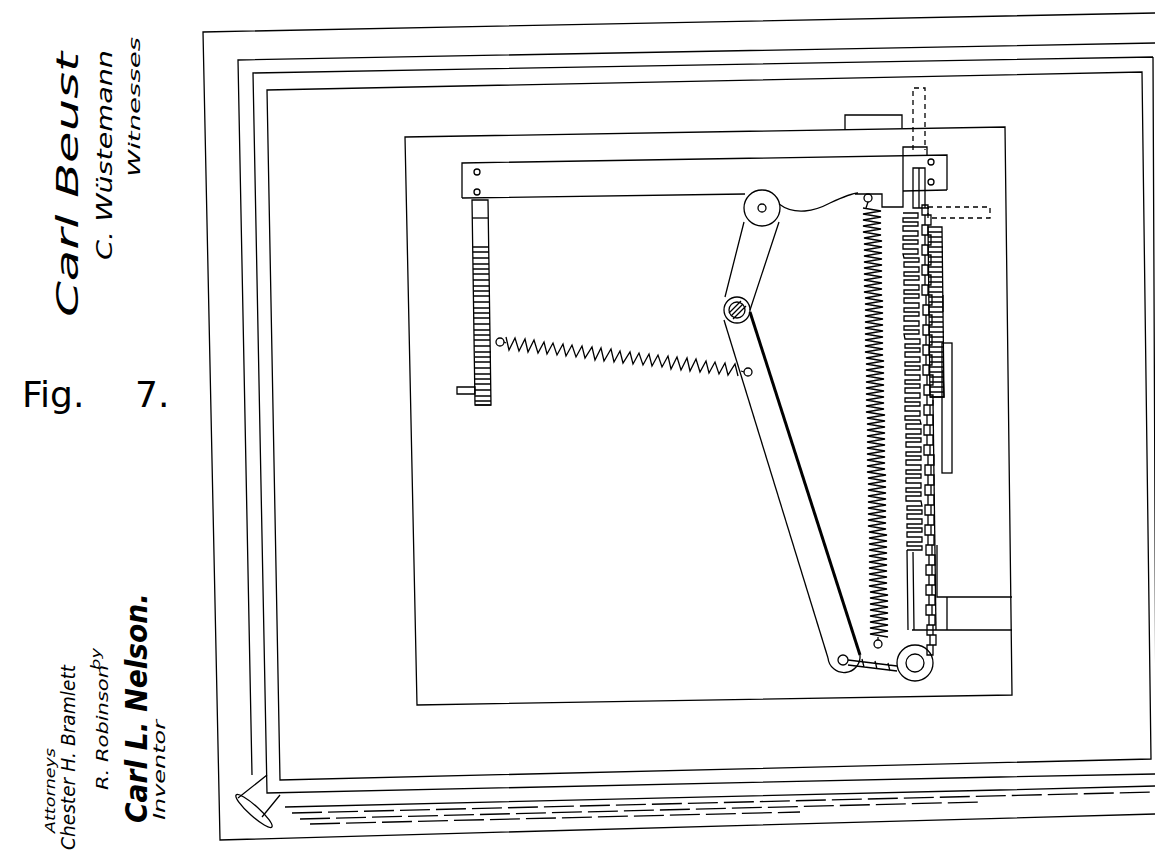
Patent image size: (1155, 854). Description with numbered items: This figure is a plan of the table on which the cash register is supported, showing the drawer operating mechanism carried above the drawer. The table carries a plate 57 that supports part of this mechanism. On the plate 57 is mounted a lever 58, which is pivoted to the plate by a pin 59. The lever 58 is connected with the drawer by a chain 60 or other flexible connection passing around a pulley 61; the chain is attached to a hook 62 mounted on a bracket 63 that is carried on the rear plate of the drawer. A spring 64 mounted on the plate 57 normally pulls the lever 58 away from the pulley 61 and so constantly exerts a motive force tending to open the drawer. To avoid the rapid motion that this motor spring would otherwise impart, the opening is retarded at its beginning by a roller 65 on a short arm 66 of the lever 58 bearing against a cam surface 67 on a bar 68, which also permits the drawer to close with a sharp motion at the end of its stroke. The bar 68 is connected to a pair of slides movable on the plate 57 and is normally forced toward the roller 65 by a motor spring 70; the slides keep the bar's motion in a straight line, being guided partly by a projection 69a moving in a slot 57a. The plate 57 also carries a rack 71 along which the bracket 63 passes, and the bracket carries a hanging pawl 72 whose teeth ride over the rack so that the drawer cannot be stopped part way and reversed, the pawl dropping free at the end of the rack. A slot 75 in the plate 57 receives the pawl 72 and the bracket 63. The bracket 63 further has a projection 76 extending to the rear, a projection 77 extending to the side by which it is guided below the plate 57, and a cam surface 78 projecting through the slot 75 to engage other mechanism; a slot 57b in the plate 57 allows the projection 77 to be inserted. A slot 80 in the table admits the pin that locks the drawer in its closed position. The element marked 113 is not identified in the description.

The plate 57 is at (685, 690).
The slot 57a is at (953, 452).
The slot 57b is at (1000, 593).
The lever 58 is at (785, 522).
The pin 59 is at (752, 312).
The chain 60 is at (888, 673).
The pulley 61 is at (934, 663).
The hook 62 is at (931, 216).
The bracket 63 is at (948, 173).
The spring 64 is at (633, 380).
The roller 65 is at (781, 216).
The short arm 66 is at (752, 270).
The cam surface 67 is at (830, 207).
The bar 68 is at (653, 190).
The projection 69a is at (947, 378).
The motor spring 70 is at (864, 346).
The rack 71 is at (905, 489).
The hanging pawl 72 is at (905, 196).
The slot 75 is at (937, 531).
The projection 76 is at (927, 110).
The projection 77 is at (990, 212).
The cam surface 78 is at (927, 200).
The slot 80 is at (856, 116).
The pin 113 is at (461, 396).